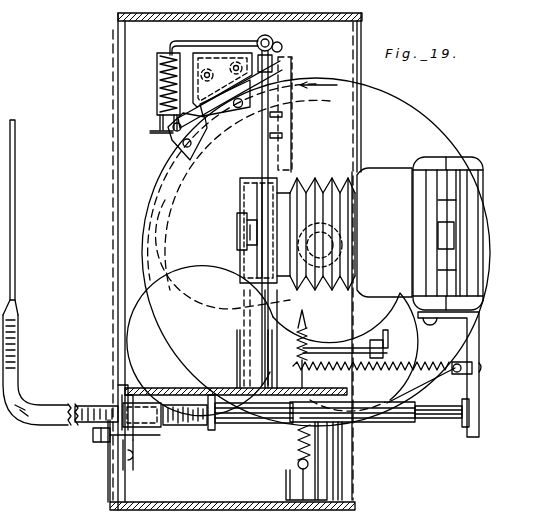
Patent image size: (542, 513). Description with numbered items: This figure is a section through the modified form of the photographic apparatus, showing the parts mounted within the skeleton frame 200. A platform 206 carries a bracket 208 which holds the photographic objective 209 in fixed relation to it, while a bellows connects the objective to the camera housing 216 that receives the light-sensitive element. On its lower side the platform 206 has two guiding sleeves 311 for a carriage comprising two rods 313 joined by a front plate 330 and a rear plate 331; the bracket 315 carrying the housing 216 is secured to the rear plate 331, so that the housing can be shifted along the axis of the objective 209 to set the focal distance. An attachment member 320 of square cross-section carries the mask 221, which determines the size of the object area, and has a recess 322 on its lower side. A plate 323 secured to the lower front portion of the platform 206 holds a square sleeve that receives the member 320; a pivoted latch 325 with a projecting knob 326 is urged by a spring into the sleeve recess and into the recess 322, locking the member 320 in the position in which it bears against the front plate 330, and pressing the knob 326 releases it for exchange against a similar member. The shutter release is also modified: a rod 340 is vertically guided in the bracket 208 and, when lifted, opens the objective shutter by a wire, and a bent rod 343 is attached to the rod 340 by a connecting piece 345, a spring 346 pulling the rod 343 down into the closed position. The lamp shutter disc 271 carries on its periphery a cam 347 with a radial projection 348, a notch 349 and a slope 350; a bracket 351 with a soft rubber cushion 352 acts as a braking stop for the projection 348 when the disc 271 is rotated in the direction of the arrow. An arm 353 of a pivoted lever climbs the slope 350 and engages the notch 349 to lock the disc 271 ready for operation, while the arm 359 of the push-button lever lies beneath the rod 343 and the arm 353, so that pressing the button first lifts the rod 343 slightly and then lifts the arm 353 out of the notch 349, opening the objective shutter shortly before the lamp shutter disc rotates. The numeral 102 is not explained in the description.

The housing 102 is at (240, 10).
The skeleton frame 200 is at (120, 250).
The platform 206 is at (183, 387).
The bracket 208 is at (243, 195).
The photographic objective 209 is at (237, 230).
The camera housing 216 is at (472, 185).
The mask 221 is at (15, 196).
The shutter disc 271 is at (432, 125).
The guiding sleeves 311 is at (397, 415).
The rods 313 is at (250, 407).
The bracket 315 is at (473, 352).
The attachment member 320 is at (27, 422).
The recess 322 is at (120, 407).
The plate 323 is at (118, 388).
The latch 325 is at (150, 436).
The knob 326 is at (95, 437).
The front plate 330 is at (215, 432).
The rear plate 331 is at (467, 428).
The rod 340 is at (282, 142).
The bent rod 343 is at (192, 47).
The connecting piece 345 is at (274, 45).
The spring 346 is at (158, 75).
The cam 347 is at (243, 108).
The radial projection 348 is at (183, 138).
The notch 349 is at (170, 127).
The slope 350 is at (250, 142).
The bracket 351 is at (218, 65).
The soft rubber cushion 352 is at (270, 74).
The arm 353 is at (282, 128).
The arm 359 is at (240, 176).